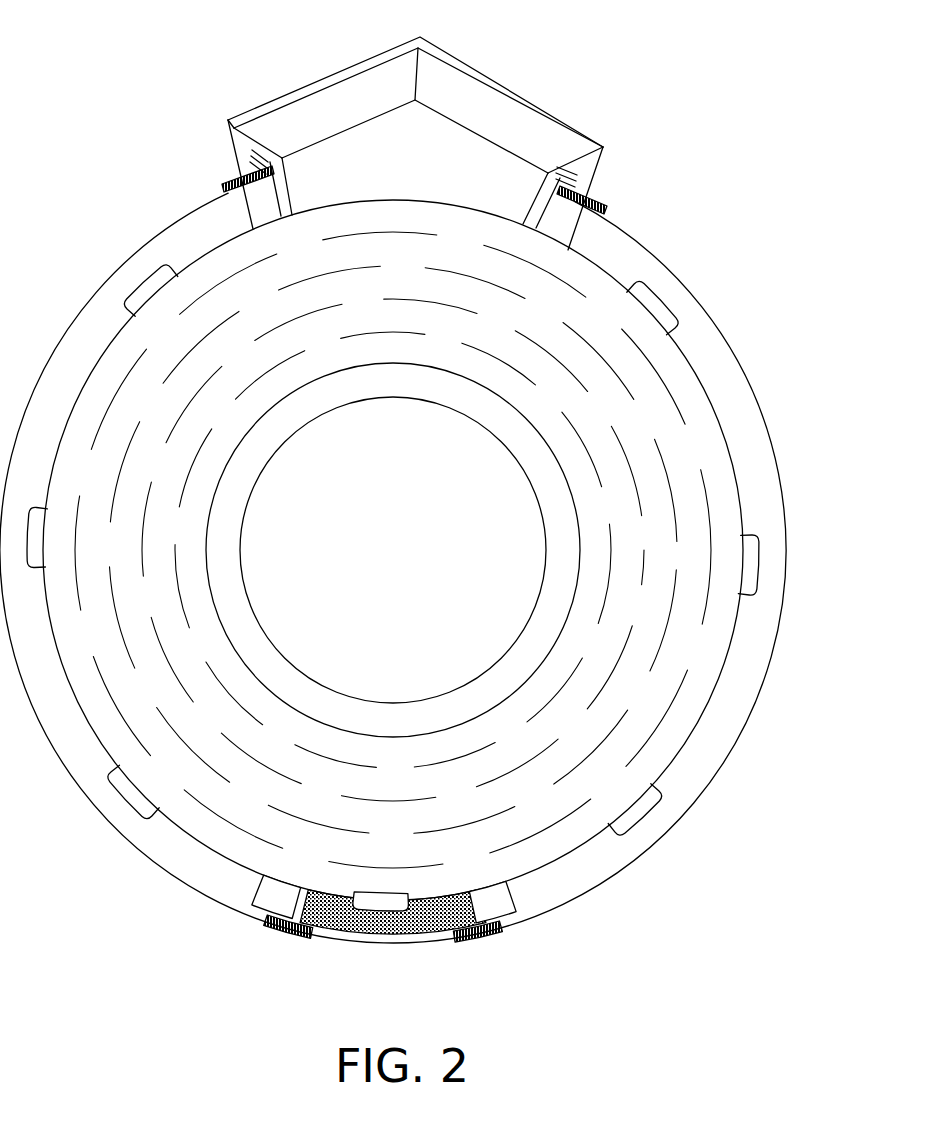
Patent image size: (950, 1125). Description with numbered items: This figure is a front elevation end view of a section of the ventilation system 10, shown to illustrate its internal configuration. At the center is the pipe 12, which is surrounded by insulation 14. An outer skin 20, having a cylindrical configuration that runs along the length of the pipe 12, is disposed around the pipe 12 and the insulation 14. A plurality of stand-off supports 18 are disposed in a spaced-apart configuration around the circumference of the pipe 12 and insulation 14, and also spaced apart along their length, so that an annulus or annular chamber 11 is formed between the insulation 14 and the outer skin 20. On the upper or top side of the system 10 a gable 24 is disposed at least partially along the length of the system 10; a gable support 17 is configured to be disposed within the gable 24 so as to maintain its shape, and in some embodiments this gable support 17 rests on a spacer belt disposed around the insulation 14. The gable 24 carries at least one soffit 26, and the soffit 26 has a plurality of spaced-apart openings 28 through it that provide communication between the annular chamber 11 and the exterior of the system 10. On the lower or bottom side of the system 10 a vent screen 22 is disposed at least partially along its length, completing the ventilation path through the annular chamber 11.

The ventilation system 10 is at (776, 352).
The annular chamber 11 is at (693, 342).
The pipe 12 is at (563, 557).
The insulation 14 is at (685, 418).
The gable support 17 is at (465, 160).
The stand-off supports 18 is at (642, 808).
The outer skin 20 is at (786, 490).
The vent screen 22 is at (405, 935).
The gable 24 is at (455, 78).
The soffit 26 is at (240, 143).
The openings 28 is at (580, 178).